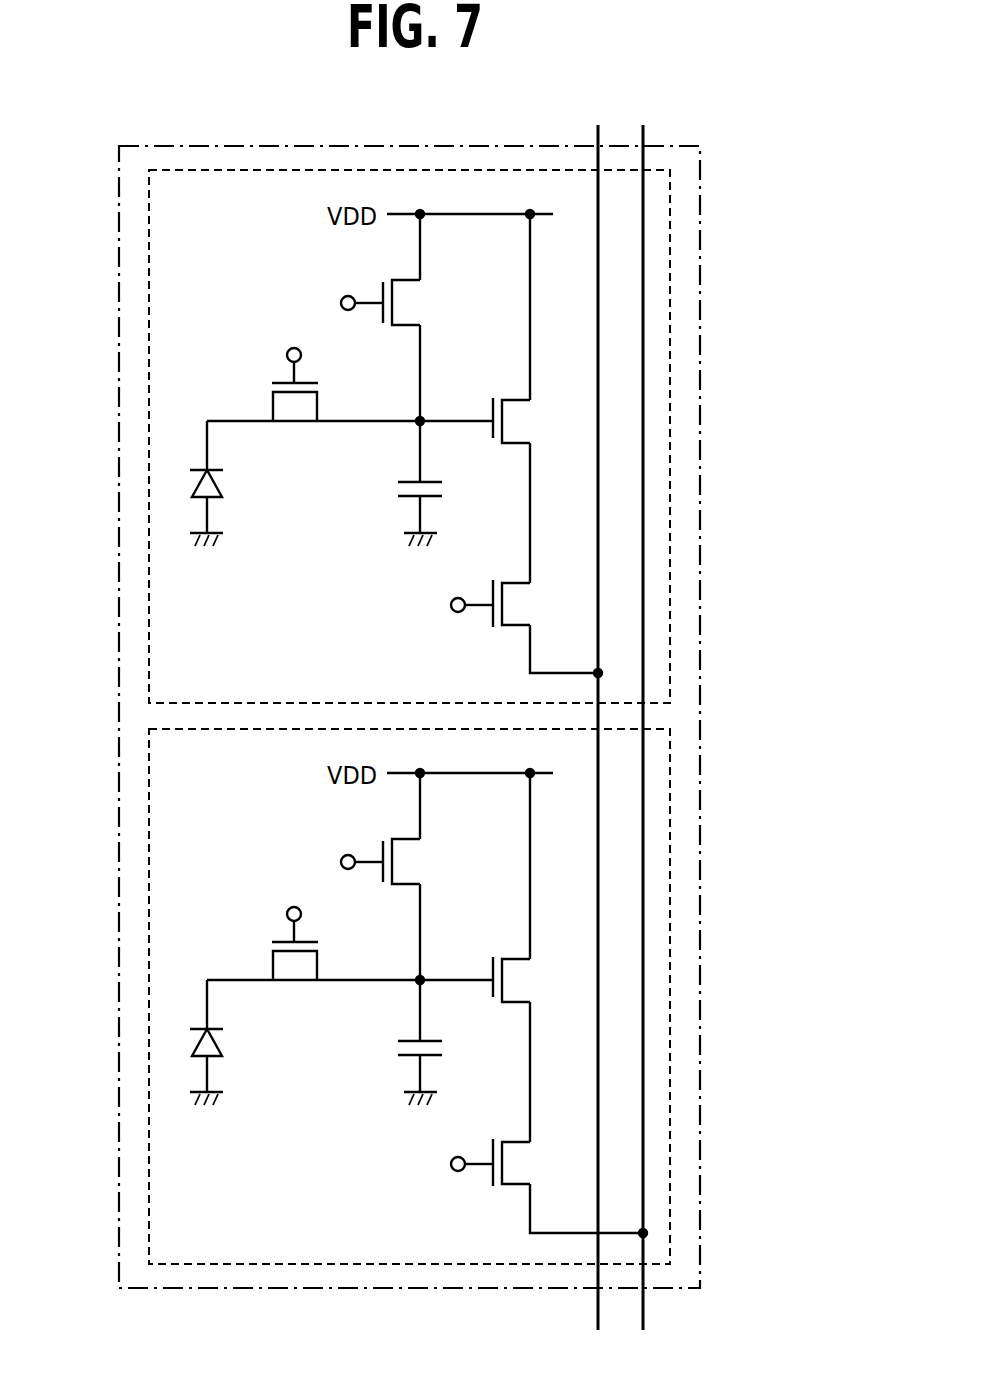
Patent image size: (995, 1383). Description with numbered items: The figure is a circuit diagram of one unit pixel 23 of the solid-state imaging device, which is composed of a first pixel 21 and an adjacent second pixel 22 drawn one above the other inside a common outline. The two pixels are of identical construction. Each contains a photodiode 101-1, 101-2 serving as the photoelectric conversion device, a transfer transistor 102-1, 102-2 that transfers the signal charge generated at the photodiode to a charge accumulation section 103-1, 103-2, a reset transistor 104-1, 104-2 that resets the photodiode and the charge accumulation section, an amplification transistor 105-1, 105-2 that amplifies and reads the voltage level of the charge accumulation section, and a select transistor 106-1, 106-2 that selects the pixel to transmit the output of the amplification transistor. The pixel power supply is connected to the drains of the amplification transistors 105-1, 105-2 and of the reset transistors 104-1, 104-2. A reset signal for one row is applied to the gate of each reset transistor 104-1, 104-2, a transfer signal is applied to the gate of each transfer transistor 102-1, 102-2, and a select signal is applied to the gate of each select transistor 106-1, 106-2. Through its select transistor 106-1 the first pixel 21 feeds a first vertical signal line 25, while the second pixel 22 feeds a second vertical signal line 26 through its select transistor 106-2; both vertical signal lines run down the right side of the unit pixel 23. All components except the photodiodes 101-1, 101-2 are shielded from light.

The first pixel 21 is at (148, 445).
The second pixel 22 is at (148, 1004).
The unit pixel 23 is at (701, 558).
The first vertical signal line 25 is at (598, 1315).
The second vertical signal line 26 is at (643, 1315).
The photodiode 101-1 is at (218, 487).
The transfer transistor 102-1 is at (292, 413).
The charge accumulation section 103-1 is at (445, 488).
The reset transistor 104-1 is at (408, 305).
The amplification transistor 105-1 is at (512, 398).
The select transistor 106-1 is at (512, 633).
The photodiode 101-2 is at (258, 1042).
The transfer transistor 102-2 is at (276, 968).
The charge accumulation section 103-2 is at (459, 1073).
The reset transistor 104-2 is at (397, 853).
The amplification transistor 105-2 is at (485, 951).
The select transistor 106-2 is at (446, 1193).